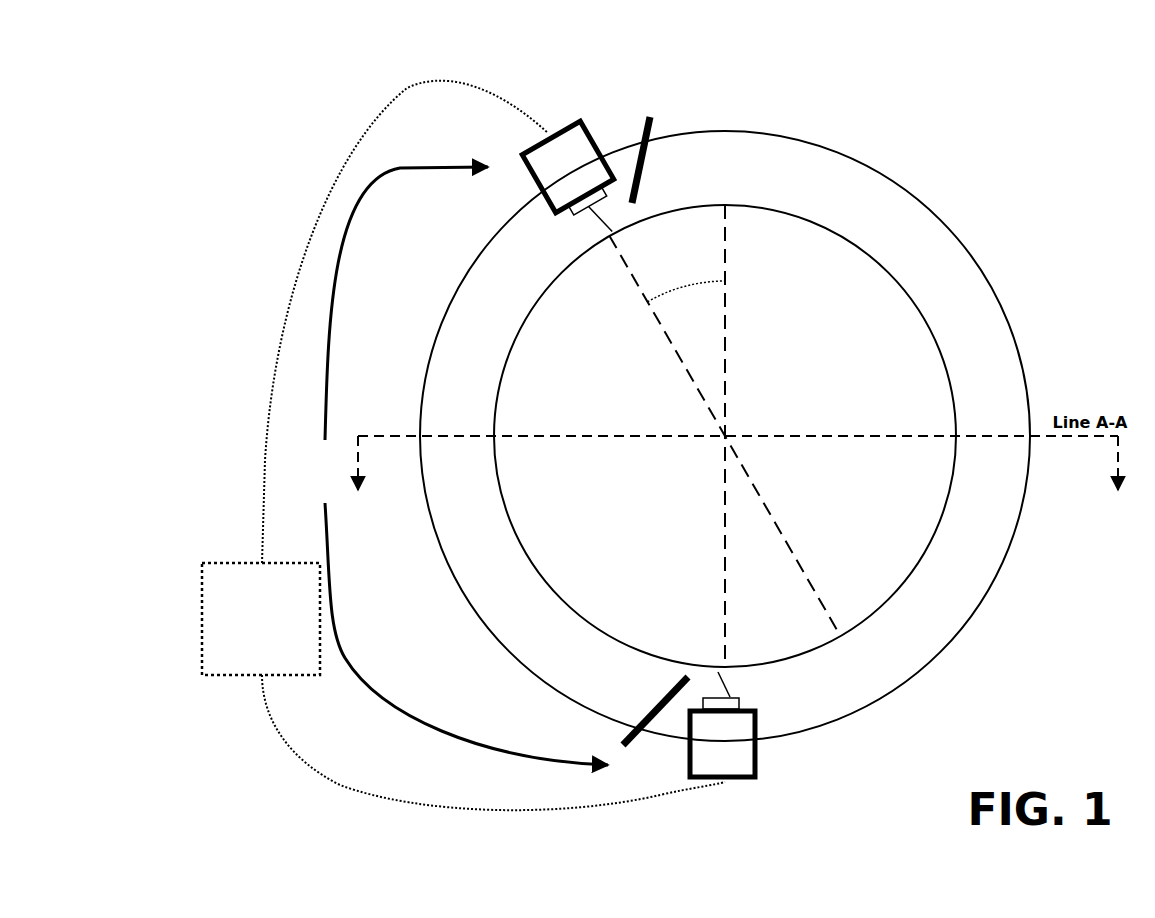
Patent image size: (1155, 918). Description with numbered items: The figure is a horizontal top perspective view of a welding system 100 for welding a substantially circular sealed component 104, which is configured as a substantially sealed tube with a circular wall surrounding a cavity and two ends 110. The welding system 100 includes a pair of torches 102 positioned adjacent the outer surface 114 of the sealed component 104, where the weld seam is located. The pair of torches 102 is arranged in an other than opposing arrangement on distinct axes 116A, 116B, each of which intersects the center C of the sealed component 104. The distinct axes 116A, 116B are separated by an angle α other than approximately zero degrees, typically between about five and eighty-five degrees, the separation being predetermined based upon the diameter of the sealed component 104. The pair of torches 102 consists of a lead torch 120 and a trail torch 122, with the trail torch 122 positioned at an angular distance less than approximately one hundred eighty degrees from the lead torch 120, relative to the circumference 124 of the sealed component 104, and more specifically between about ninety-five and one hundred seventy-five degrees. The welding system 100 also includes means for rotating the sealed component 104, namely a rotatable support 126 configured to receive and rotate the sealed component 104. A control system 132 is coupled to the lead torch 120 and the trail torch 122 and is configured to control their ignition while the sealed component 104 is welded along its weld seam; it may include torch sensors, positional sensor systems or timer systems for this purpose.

The welding system 100 is at (998, 159).
The pair of torches 102 is at (456, 466).
The substantially circular sealed component 104 is at (964, 543).
The ends 110 is at (791, 340).
The outer surface 114 is at (785, 212).
The distinct axis 116A is at (723, 523).
The distinct axis 116B is at (663, 337).
The lead torch 120 is at (718, 747).
The trail torch 122 is at (568, 177).
The circumference 124 is at (937, 325).
The rotatable support 126 is at (930, 615).
The control system 132 is at (239, 634).